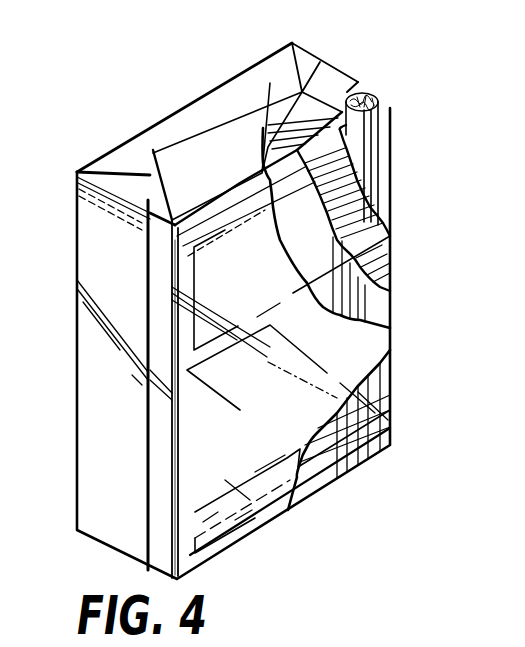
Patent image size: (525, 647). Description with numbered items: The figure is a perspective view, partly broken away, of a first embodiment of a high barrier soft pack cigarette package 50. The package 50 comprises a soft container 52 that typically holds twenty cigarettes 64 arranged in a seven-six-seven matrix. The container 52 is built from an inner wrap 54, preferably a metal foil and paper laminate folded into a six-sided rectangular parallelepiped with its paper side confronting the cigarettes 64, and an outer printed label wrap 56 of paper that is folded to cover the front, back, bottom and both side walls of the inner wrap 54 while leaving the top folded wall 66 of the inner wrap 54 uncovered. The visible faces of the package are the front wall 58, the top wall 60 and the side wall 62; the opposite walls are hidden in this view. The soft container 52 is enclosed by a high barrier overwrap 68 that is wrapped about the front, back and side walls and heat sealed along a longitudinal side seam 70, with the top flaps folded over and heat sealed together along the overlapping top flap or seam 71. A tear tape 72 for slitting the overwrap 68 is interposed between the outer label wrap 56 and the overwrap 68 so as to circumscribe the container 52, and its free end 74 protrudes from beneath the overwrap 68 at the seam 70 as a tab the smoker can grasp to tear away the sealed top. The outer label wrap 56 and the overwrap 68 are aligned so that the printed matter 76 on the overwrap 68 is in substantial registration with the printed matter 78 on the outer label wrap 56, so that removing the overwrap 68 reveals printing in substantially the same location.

The cigarette package 50 is at (442, 138).
The soft container 52 is at (343, 67).
The inner wrap 54 is at (368, 246).
The outer label wrap 56 is at (365, 303).
The front wall 58 is at (353, 348).
The top wall 60 is at (168, 112).
The side wall 62 is at (95, 336).
The cigarettes 64 is at (380, 121).
The top folded wall 66 is at (348, 84).
The high barrier overwrap 68 is at (215, 433).
The longitudinal side seam 70 is at (148, 453).
The top flap or seam 71 is at (236, 151).
The tear tape 72 is at (238, 215).
The free end 74 is at (148, 246).
The printed matter 76 is at (243, 474).
The printed matter 78 is at (385, 428).